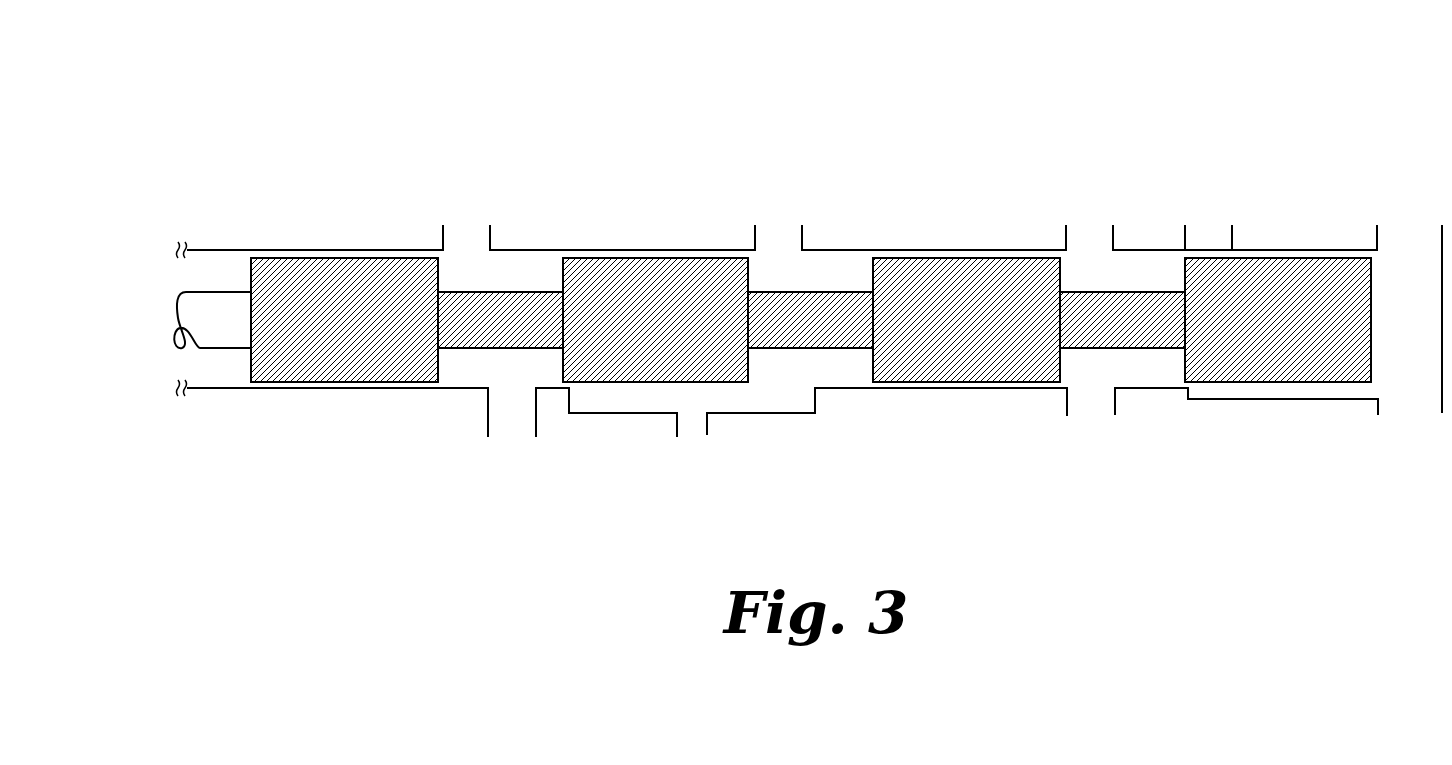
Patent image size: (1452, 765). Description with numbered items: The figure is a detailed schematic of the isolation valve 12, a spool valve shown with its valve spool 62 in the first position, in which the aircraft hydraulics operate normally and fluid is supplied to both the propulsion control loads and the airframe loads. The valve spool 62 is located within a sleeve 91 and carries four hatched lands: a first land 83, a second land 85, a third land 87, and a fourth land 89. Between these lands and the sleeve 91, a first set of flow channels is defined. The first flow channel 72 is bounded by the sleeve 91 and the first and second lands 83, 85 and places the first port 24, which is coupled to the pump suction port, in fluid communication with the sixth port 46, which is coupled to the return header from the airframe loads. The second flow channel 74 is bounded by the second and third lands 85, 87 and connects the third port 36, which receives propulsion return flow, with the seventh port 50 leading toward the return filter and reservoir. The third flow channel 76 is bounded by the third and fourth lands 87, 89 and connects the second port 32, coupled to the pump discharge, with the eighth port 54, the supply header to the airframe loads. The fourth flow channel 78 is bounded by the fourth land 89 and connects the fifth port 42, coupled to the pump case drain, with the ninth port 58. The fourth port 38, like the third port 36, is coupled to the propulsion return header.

The isolation valve 12 is at (1060, 68).
The first port 24 is at (517, 413).
The second port 32 is at (1088, 400).
The third port 36 is at (693, 418).
The fourth port 38 is at (1211, 247).
The fifth port 42 is at (1398, 408).
The sixth port 46 is at (465, 242).
The seventh port 50 is at (777, 240).
The eighth port 54 is at (1085, 240).
The ninth port 58 is at (1401, 230).
The valve spool 62 is at (853, 288).
The first flow channel 72 is at (488, 274).
The second flow channel 74 is at (793, 273).
The third flow channel 76 is at (1105, 272).
The fourth flow channel 78 is at (1395, 260).
The first land 83 is at (251, 367).
The second land 85 is at (563, 370).
The third land 87 is at (870, 367).
The fourth land 89 is at (1185, 365).
The sleeve 91 is at (553, 249).